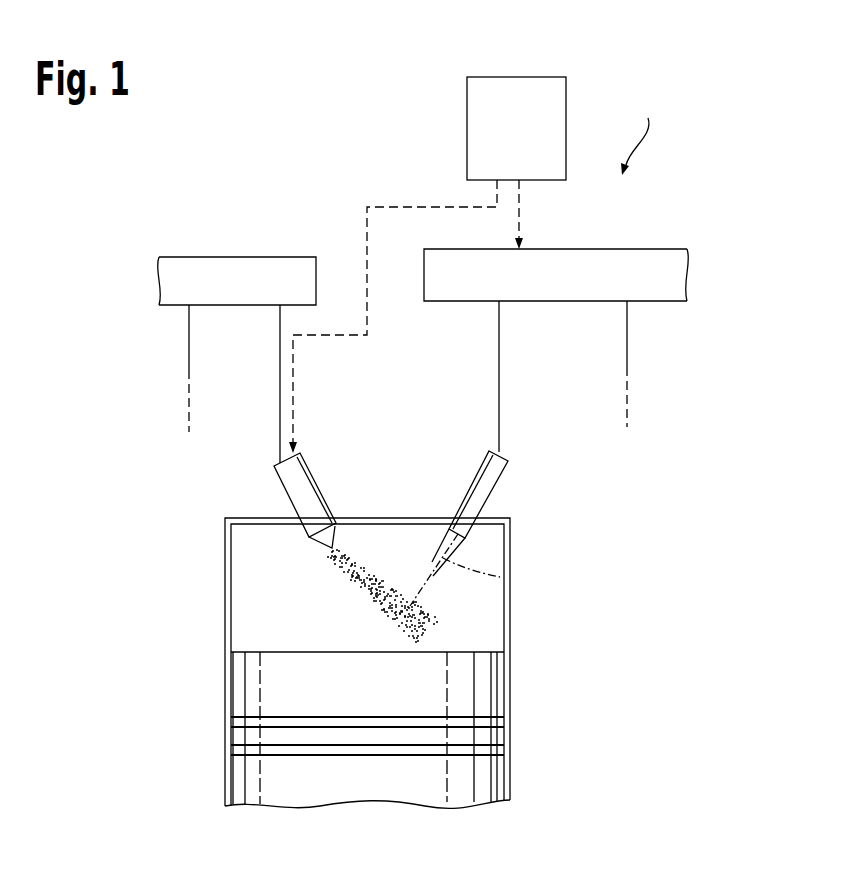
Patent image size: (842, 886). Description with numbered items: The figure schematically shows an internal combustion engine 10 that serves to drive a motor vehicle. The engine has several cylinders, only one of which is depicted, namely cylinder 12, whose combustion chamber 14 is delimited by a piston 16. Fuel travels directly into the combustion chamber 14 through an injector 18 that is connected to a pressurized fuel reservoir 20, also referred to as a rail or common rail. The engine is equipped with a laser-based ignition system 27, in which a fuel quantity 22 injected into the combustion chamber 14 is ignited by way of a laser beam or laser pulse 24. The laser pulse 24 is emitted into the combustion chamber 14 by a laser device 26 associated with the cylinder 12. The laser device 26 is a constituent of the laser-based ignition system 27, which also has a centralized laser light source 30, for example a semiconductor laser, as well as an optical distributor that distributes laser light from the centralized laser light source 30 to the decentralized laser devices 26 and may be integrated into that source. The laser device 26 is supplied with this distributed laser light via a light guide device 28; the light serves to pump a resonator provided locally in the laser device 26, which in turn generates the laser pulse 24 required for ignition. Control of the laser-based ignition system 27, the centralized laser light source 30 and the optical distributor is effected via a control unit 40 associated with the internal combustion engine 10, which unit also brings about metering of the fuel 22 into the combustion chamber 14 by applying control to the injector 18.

The internal combustion engine 10 is at (477, 663).
The cylinder 12 is at (508, 623).
The combustion chamber 14 is at (495, 598).
The piston 16 is at (496, 693).
The injector 18 is at (308, 490).
The pressurized fuel reservoir 20 is at (230, 267).
The fuel quantity 22 is at (370, 567).
The laser pulse 24 is at (507, 577).
The laser device 26 is at (493, 473).
The laser-based ignition system 27 is at (646, 129).
The light guide device 28 is at (499, 362).
The centralized laser light source 30 is at (660, 258).
The control unit 40 is at (489, 84).